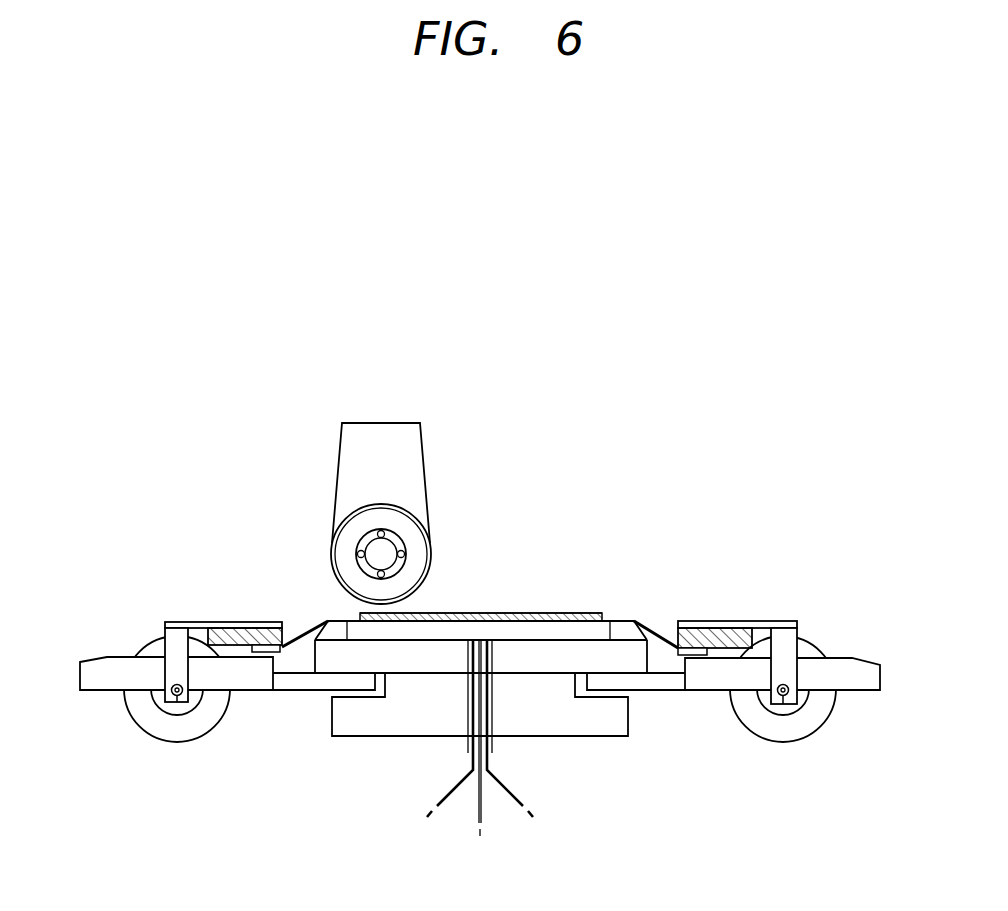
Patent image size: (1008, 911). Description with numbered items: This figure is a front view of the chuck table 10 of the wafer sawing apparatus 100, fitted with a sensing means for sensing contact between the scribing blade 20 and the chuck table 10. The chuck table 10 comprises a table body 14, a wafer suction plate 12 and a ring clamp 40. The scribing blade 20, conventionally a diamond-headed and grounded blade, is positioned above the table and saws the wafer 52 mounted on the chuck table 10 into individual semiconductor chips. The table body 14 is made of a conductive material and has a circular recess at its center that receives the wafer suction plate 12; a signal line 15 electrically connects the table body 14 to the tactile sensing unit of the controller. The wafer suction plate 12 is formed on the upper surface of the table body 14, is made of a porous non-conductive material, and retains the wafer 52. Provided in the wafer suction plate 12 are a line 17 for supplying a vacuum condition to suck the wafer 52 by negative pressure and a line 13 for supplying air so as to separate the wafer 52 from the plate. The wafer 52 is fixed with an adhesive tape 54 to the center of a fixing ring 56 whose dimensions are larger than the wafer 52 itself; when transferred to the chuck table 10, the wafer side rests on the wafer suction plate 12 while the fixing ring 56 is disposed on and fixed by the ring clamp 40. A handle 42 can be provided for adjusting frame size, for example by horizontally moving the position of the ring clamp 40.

The wafer sawing apparatus 100 is at (713, 468).
The chuck table 10 is at (365, 735).
The wafer suction plate 12 is at (584, 619).
The line for supplying air 13 is at (453, 790).
The table body 14 is at (535, 636).
The signal line 15 is at (478, 813).
The line for supplying vacuum 17 is at (507, 790).
The scribing blade 20 is at (428, 482).
The ring clamp 40 is at (734, 621).
The handle 42 is at (807, 742).
The wafer 52 is at (462, 613).
The adhesive tape 54 is at (300, 630).
The fixing ring 56 is at (232, 658).